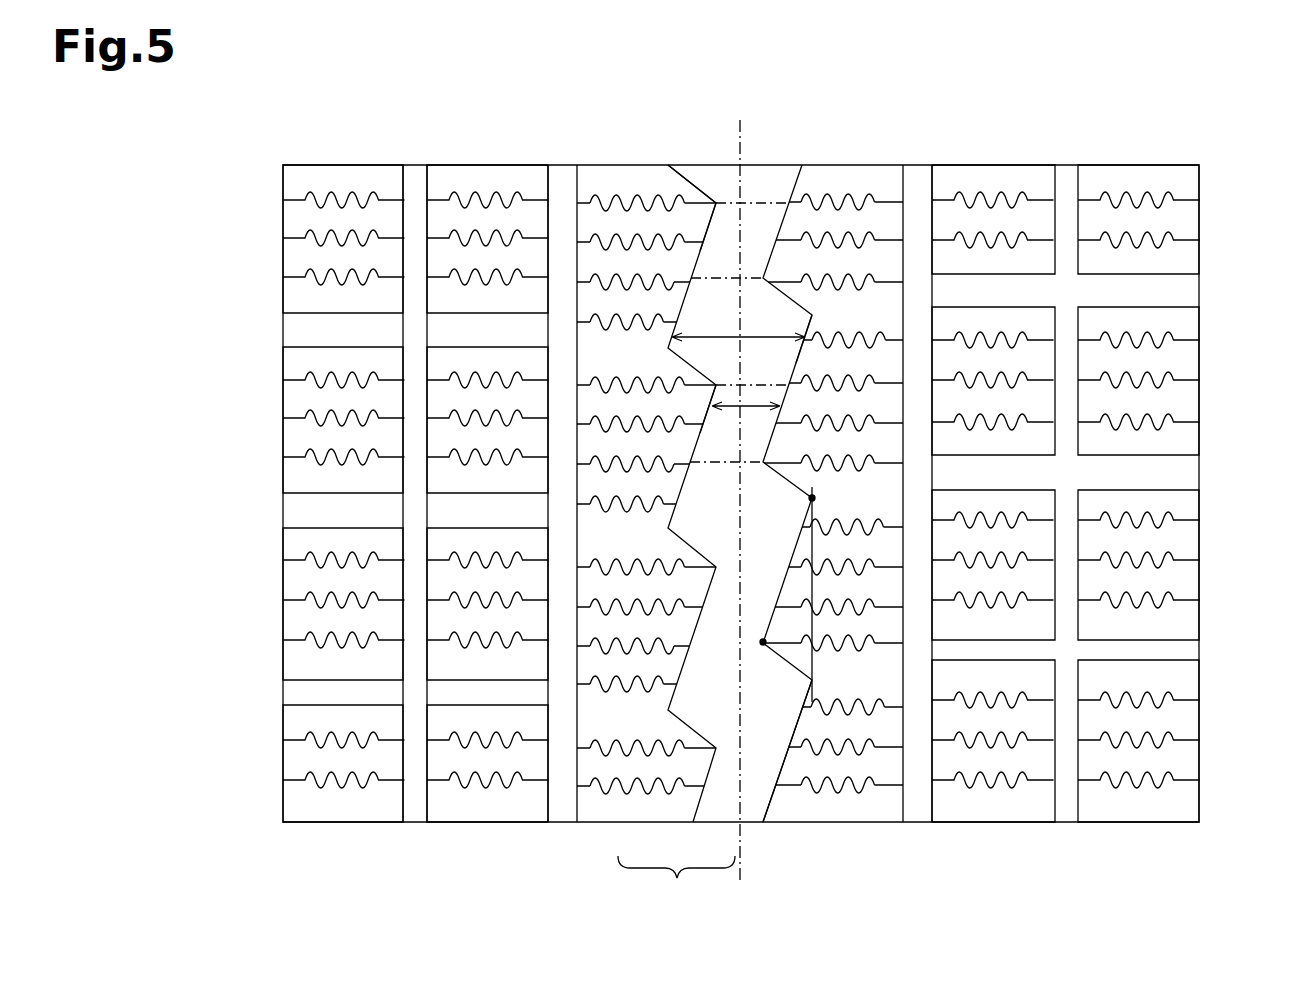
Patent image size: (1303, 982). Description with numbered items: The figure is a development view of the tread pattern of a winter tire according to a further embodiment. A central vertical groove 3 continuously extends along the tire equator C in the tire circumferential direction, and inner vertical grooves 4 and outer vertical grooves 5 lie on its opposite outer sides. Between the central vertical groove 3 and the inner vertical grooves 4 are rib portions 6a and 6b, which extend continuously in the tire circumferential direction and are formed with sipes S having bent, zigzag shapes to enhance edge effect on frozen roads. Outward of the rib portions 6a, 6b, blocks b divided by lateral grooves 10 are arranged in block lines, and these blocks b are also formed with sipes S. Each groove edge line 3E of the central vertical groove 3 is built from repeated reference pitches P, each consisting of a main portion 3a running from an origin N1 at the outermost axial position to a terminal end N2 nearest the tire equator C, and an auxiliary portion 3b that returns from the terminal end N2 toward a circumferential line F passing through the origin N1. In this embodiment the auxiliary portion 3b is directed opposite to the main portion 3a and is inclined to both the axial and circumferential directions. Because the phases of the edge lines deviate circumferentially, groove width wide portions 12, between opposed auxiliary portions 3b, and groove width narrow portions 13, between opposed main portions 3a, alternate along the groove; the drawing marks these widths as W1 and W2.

The central vertical groove 3 is at (717, 489).
The main portion 3a is at (783, 583).
The auxiliary portion 3b is at (789, 662).
The groove edge line 3E is at (696, 177).
The inner vertical groove 4 is at (562, 178).
The outer vertical groove 5 is at (415, 178).
The rib portion 6a is at (840, 158).
The rib portion 6b is at (605, 154).
The lateral groove 10 is at (305, 512).
The groove width wide portion 12 is at (792, 319).
The groove width narrow portion 13 is at (715, 234).
The block b is at (317, 180).
The sipe S is at (288, 205).
The tire equator C is at (739, 486).
The maximum groove width W1 is at (738, 332).
The minimum groove width W2 is at (712, 406).
The origin N1 is at (810, 499).
The terminal end N2 is at (763, 642).
The reference pitch P is at (676, 885).
The line F is at (813, 665).